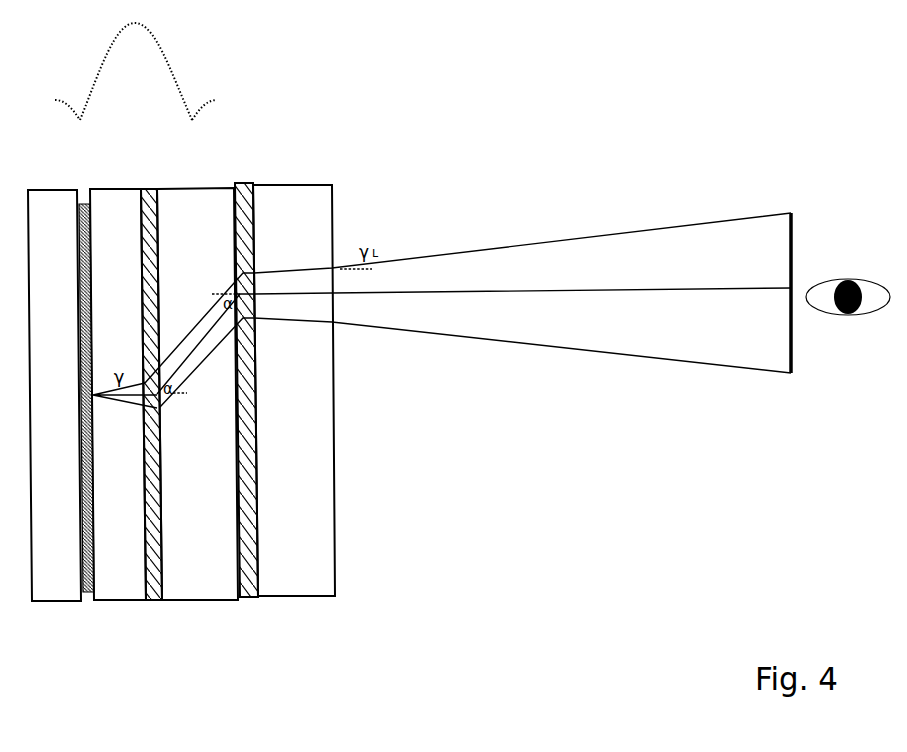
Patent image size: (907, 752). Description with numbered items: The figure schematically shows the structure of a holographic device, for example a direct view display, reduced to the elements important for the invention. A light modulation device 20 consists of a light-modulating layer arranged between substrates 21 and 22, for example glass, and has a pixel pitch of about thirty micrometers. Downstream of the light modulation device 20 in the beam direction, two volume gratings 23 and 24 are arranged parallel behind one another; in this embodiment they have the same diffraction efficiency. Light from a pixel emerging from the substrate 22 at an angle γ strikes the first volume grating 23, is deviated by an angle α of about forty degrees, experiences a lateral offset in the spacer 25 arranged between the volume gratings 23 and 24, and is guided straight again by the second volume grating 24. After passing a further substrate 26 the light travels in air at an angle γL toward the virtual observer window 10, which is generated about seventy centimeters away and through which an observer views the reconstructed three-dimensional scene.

The virtual observer window 10 is at (792, 242).
The light modulation device 20 is at (88, 610).
The substrate 21 is at (52, 213).
The substrate 22 is at (113, 213).
The first volume grating 23 is at (148, 193).
The second volume grating 24 is at (238, 185).
The spacer 25 is at (182, 213).
The further substrate 26 is at (283, 213).